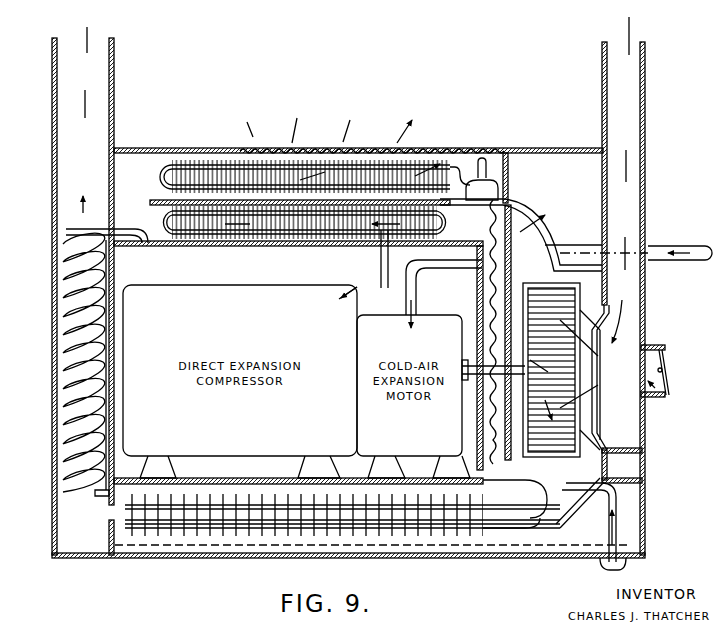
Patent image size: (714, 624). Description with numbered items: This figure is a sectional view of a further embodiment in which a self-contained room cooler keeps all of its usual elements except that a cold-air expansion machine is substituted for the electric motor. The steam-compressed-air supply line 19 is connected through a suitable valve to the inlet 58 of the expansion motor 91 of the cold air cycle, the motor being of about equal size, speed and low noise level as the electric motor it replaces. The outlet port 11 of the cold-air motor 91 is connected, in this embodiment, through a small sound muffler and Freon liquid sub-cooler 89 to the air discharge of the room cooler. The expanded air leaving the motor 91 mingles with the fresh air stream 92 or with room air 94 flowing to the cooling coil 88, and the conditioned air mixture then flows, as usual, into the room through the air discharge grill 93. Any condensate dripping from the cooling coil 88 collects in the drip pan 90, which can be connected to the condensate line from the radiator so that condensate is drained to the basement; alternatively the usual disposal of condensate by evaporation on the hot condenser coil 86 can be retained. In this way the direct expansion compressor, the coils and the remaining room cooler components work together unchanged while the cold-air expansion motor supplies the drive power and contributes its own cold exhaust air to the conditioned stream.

The outlet port 11 is at (462, 443).
The steam-compressed-air supply line 19 is at (670, 252).
The inlet 58 is at (418, 306).
The condenser coil 86 is at (66, 322).
The cooling coil 88 is at (205, 165).
The sound muffler and Freon liquid sub-cooler 89 is at (490, 328).
The drip pan 90 is at (266, 246).
The motor 91 is at (510, 236).
The fresh air stream 92 is at (636, 151).
The air discharge grill 93 is at (318, 147).
The room air 94 is at (666, 362).